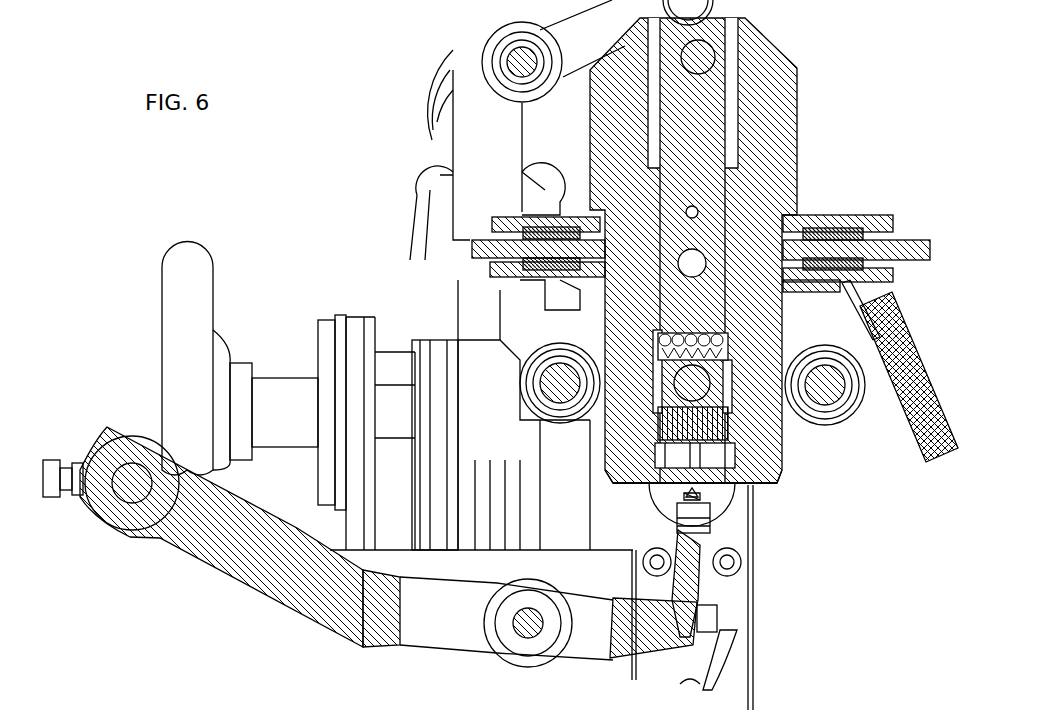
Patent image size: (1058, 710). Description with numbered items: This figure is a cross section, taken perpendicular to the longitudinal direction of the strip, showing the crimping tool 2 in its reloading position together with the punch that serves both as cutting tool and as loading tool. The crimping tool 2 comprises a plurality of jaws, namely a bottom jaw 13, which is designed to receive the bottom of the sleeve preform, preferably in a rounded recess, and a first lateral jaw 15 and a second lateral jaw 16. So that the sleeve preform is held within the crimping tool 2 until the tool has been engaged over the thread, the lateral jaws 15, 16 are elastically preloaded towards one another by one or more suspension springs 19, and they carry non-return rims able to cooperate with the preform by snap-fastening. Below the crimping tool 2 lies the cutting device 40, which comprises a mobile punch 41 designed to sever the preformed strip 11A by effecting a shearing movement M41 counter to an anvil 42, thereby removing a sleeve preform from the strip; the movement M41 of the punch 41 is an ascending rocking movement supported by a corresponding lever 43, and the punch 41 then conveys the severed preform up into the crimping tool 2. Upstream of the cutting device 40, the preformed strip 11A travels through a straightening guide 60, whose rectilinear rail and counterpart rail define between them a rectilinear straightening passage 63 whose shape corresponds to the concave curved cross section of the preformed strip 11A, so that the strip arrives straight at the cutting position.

The crimping tool 2 is at (795, 190).
The suspension spring 19 is at (822, 220).
The bottom jaw 13 is at (862, 368).
The first lateral jaw 15 is at (780, 457).
The second lateral jaw 16 is at (737, 488).
The anvil 42 is at (692, 493).
The preformed strip 11A is at (695, 502).
The straightening guide 60 is at (698, 507).
The rectilinear straightening passage 63 is at (760, 534).
The cutting device 40 is at (735, 523).
The mobile punch 41 is at (690, 587).
The shearing movement M41 is at (723, 658).
The lever 43 is at (293, 603).